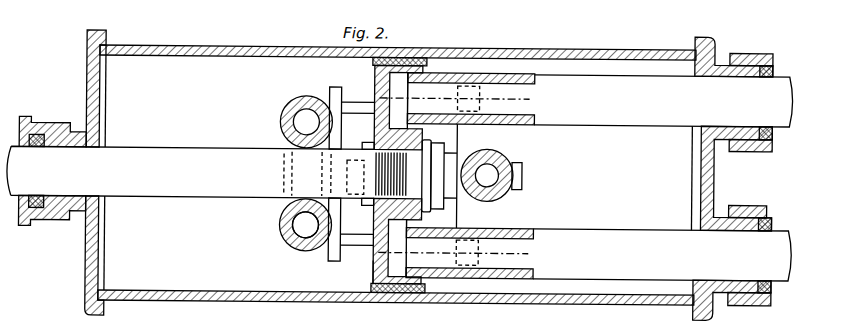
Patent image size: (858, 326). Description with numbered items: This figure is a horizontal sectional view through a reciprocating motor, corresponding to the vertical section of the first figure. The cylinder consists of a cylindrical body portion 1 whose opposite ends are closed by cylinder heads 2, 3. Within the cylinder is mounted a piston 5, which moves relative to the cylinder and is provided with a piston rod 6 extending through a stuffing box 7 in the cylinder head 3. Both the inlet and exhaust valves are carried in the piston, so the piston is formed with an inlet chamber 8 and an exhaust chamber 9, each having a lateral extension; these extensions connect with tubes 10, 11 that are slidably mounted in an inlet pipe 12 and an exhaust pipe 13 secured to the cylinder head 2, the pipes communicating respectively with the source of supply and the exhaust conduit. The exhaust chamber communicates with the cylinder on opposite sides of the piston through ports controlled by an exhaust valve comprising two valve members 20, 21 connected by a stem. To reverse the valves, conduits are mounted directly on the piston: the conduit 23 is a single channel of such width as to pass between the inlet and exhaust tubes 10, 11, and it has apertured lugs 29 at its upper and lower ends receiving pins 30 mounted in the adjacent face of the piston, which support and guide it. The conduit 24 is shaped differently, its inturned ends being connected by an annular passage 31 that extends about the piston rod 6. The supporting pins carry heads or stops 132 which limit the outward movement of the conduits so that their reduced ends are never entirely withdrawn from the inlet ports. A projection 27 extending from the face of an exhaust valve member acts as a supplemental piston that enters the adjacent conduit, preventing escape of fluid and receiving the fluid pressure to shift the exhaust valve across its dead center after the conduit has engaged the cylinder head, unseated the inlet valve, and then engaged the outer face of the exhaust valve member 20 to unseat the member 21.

The cylindrical body portion 1 is at (540, 297).
The cylinder head 2 is at (710, 176).
The cylinder head 3 is at (86, 97).
The piston 5 is at (375, 70).
The piston rod 6 is at (164, 150).
The stuffing box 7 is at (77, 131).
The inlet chamber 8 is at (419, 57).
The exhaust chamber 9 is at (375, 258).
The inlet tube 10 is at (619, 121).
The exhaust tube 11 is at (628, 230).
The inlet pipe 12 is at (753, 48).
The exhaust pipe 13 is at (748, 200).
The exhaust valve member 20 is at (444, 150).
The exhaust valve member 21 is at (365, 203).
The conduit 23 is at (512, 167).
The conduit 24 is at (285, 203).
The projection 27 is at (494, 198).
The apertured lug 29 is at (336, 85).
The pin 30 is at (356, 103).
The annular passage 31 is at (283, 110).
The head 132 is at (330, 93).